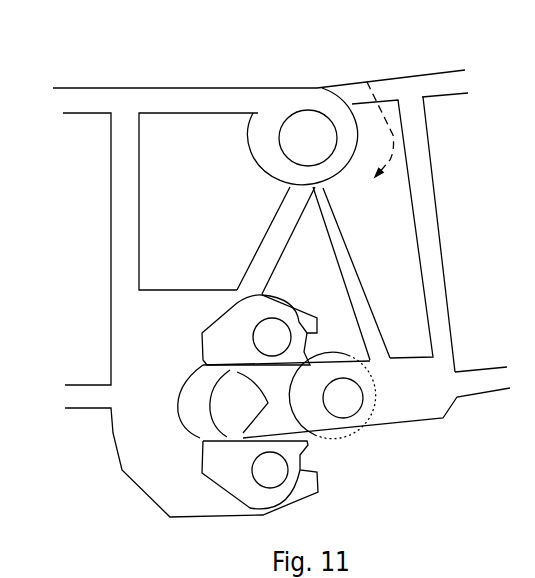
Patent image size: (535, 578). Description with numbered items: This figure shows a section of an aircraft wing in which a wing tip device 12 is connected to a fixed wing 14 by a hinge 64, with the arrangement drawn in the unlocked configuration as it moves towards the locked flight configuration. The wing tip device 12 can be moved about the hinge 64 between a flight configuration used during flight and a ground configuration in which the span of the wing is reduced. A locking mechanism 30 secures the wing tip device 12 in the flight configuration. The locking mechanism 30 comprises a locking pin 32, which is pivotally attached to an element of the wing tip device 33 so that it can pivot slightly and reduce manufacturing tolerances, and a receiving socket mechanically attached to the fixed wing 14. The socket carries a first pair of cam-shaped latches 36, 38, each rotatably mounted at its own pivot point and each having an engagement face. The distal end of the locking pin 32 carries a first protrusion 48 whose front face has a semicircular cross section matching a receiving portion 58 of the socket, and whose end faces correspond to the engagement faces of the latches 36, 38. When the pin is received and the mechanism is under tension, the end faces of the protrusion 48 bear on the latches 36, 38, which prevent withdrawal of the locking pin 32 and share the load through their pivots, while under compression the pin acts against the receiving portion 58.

The wing tip device 12 is at (423, 92).
The fixed wing 14 is at (130, 103).
The locking mechanism 30 is at (340, 470).
The locking pin 32 is at (288, 417).
The element of a wing tip device 33 is at (343, 399).
The latch 36 is at (227, 343).
The latch 38 is at (215, 468).
The first protrusion 48 is at (230, 390).
The receiving portion 58 is at (180, 410).
The hinge 64 is at (303, 137).